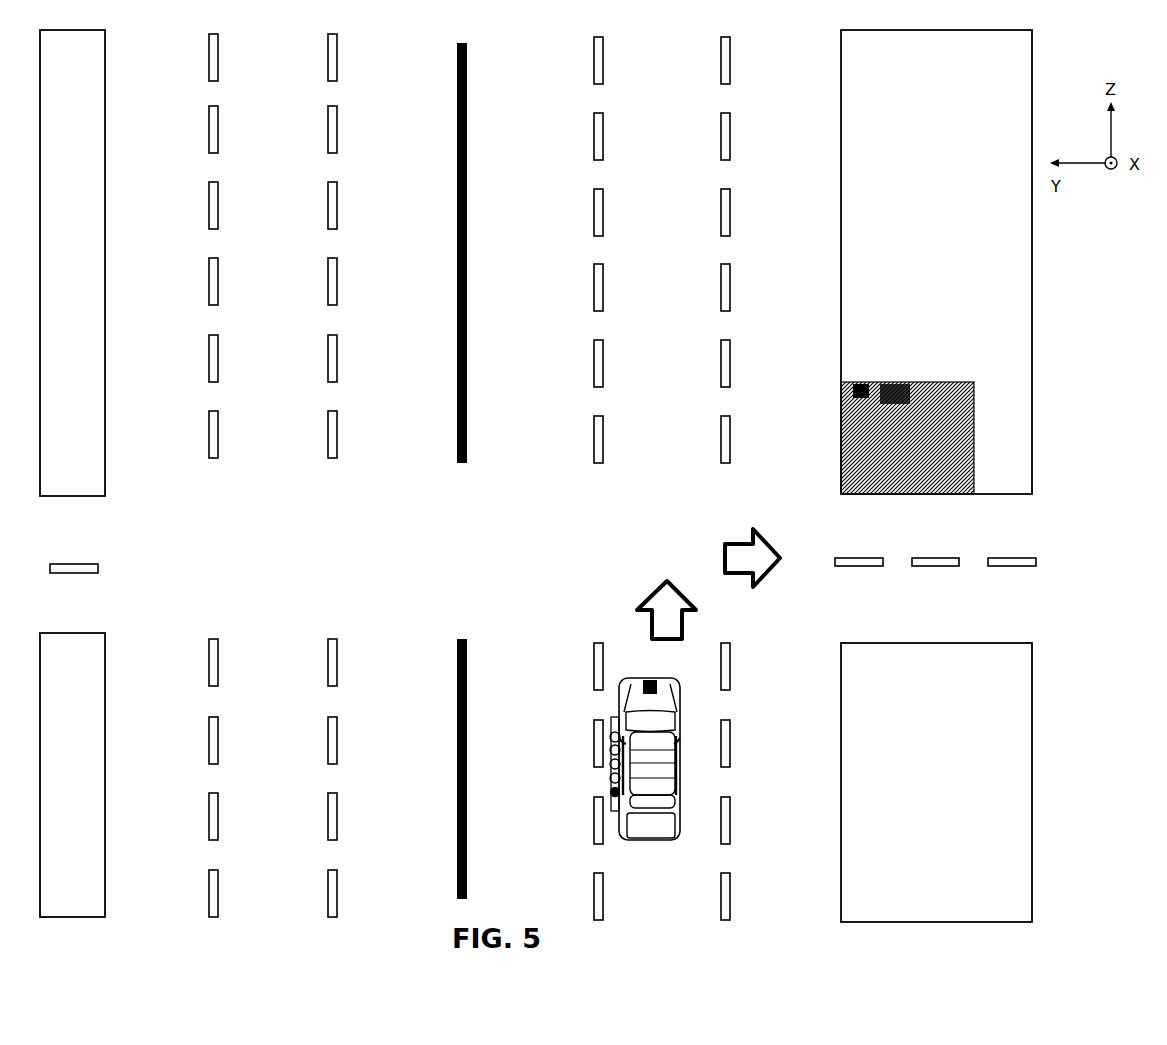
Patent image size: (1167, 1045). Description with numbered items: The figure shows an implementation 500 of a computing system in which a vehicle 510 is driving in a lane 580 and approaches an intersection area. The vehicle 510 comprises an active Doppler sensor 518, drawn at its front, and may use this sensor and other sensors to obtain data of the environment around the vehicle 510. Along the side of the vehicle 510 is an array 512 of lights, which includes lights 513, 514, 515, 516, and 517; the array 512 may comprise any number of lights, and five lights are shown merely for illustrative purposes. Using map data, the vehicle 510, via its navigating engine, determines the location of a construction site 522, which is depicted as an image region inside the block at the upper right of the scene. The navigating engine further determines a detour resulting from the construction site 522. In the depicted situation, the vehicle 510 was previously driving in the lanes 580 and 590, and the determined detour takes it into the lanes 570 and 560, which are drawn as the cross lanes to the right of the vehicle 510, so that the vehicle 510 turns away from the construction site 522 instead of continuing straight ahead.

The implementation 500 is at (1048, 57).
The vehicle 510 is at (680, 823).
The array of lights 512 is at (614, 717).
The light 513 is at (660, 736).
The light 514 is at (620, 750).
The light 515 is at (640, 764).
The light 516 is at (620, 778).
The light 517 is at (619, 792).
The active Doppler sensor 518 is at (650, 680).
The construction site 522 is at (907, 420).
The lane 560 is at (936, 756).
The lane 570 is at (935, 539).
The lane 580 is at (662, 478).
The lane 590 is at (504, 471).